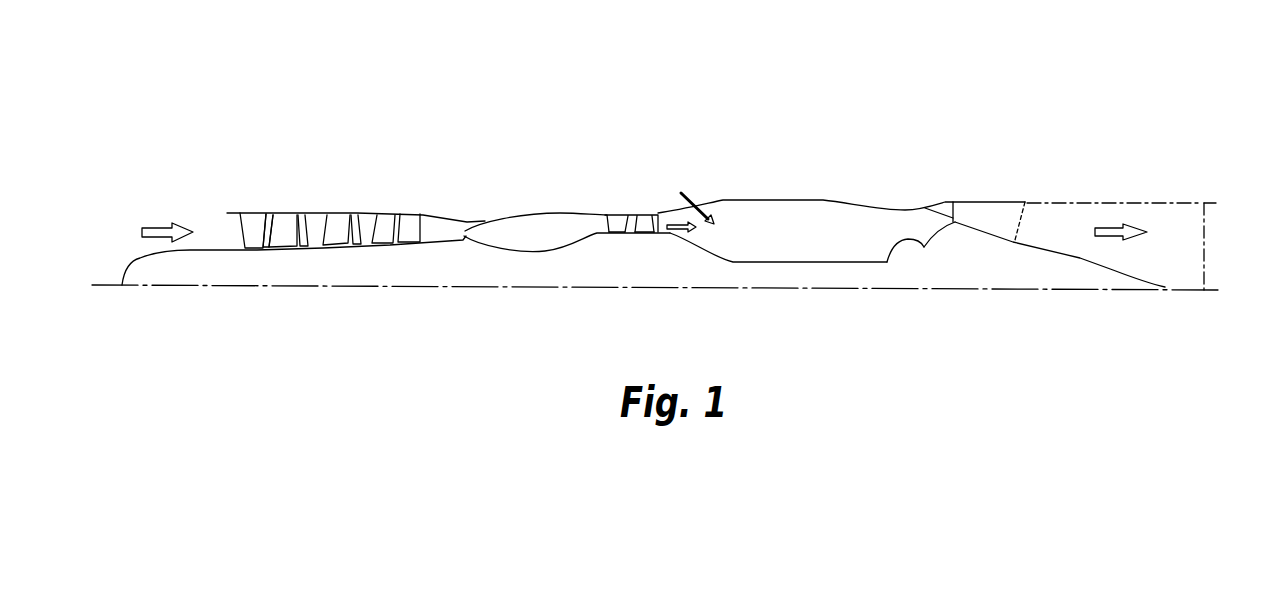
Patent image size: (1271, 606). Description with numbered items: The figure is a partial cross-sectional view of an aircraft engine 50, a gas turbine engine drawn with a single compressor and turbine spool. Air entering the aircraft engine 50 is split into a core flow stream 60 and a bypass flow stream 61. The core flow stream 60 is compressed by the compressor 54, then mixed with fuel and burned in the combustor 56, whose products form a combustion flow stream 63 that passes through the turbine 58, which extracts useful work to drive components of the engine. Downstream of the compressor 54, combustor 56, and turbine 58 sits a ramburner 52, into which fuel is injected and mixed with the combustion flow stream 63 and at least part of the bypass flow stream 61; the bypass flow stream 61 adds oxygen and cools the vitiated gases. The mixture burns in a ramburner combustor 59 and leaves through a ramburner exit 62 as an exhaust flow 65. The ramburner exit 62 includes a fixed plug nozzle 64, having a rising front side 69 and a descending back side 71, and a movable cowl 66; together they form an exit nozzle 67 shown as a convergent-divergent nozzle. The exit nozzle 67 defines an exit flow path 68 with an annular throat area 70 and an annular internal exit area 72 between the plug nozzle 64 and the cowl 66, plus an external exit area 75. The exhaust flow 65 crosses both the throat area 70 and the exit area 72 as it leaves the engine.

The aircraft engine 50 is at (604, 80).
The ramburner 52 is at (840, 139).
The compressor 54 is at (345, 170).
The combustor 56 is at (542, 190).
The turbine 58 is at (634, 187).
The ramburner combustor 59 is at (803, 243).
The core flow stream 60 is at (152, 227).
The bypass flow stream 61 is at (690, 196).
The ramburner exit 62 is at (974, 166).
The combustion flow stream 63 is at (677, 236).
The plug nozzle 64 is at (990, 256).
The exhaust flow 65 is at (1110, 224).
The movable cowl 66 is at (963, 202).
The exit nozzle 67 is at (1022, 180).
The exit flow path 68 is at (982, 219).
The rising front side 69 is at (887, 264).
The throat area 70 is at (933, 205).
The descending back side 71 is at (1092, 260).
The internal exit area 72 is at (1023, 223).
The external exit area 75 is at (1205, 220).